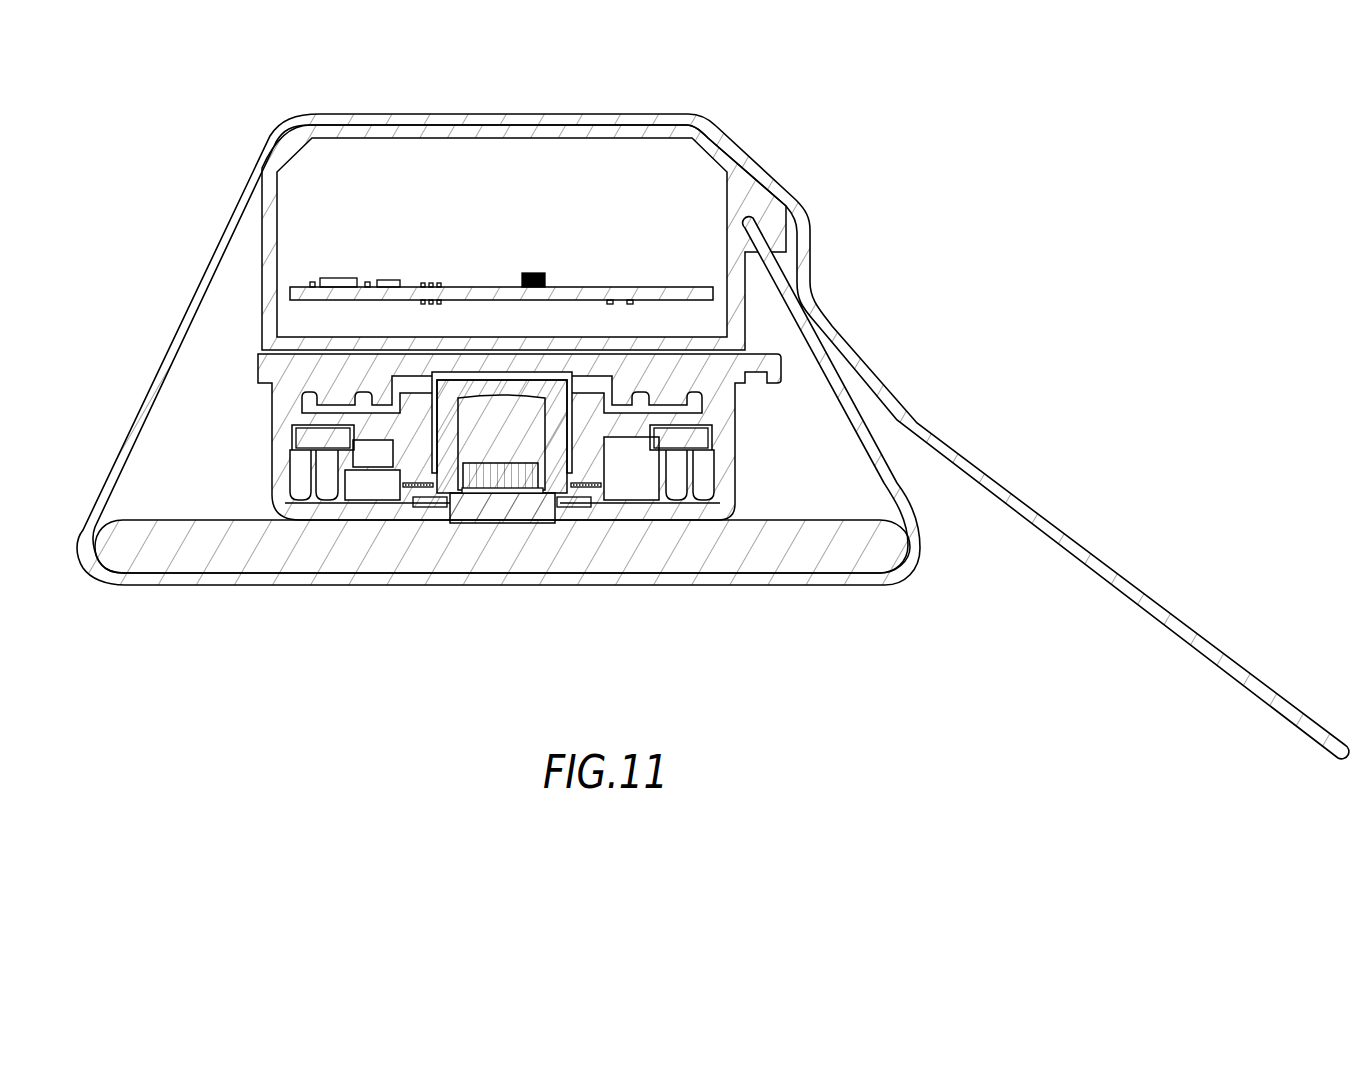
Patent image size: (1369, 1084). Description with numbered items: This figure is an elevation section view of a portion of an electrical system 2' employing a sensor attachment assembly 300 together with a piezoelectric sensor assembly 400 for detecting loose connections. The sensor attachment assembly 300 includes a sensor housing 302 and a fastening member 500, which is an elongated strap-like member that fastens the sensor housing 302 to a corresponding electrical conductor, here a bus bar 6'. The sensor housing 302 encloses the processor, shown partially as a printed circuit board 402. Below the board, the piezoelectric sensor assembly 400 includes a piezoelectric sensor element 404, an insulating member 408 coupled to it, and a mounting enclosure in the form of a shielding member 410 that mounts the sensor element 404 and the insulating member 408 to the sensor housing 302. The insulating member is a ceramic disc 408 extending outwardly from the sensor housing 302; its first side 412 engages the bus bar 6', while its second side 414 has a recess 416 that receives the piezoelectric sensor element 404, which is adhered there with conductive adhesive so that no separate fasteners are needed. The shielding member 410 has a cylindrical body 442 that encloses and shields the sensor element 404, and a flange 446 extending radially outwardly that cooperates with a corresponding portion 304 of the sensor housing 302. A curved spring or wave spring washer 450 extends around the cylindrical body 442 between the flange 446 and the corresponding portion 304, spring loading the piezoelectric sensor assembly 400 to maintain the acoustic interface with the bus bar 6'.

The electrical system 2' is at (713, 417).
The sensor attachment assembly 300 is at (820, 170).
The fastening member 500 is at (212, 265).
The bus bar 6' is at (502, 514).
The printed circuit board 402 is at (588, 292).
The sensor housing 302 is at (270, 407).
The corresponding portion of the sensor housing 304 is at (604, 497).
The piezoelectric sensor element 404 is at (510, 450).
The recess 416 is at (537, 470).
The shielding member 410 is at (580, 416).
The cylindrical body 442 is at (438, 440).
The second side 414 is at (441, 483).
The wave spring washer 450 is at (403, 486).
The piezoelectric sensor assembly 400 is at (365, 545).
The flange 446 is at (428, 507).
The first side 412 is at (499, 525).
The insulating member 408 is at (572, 535).